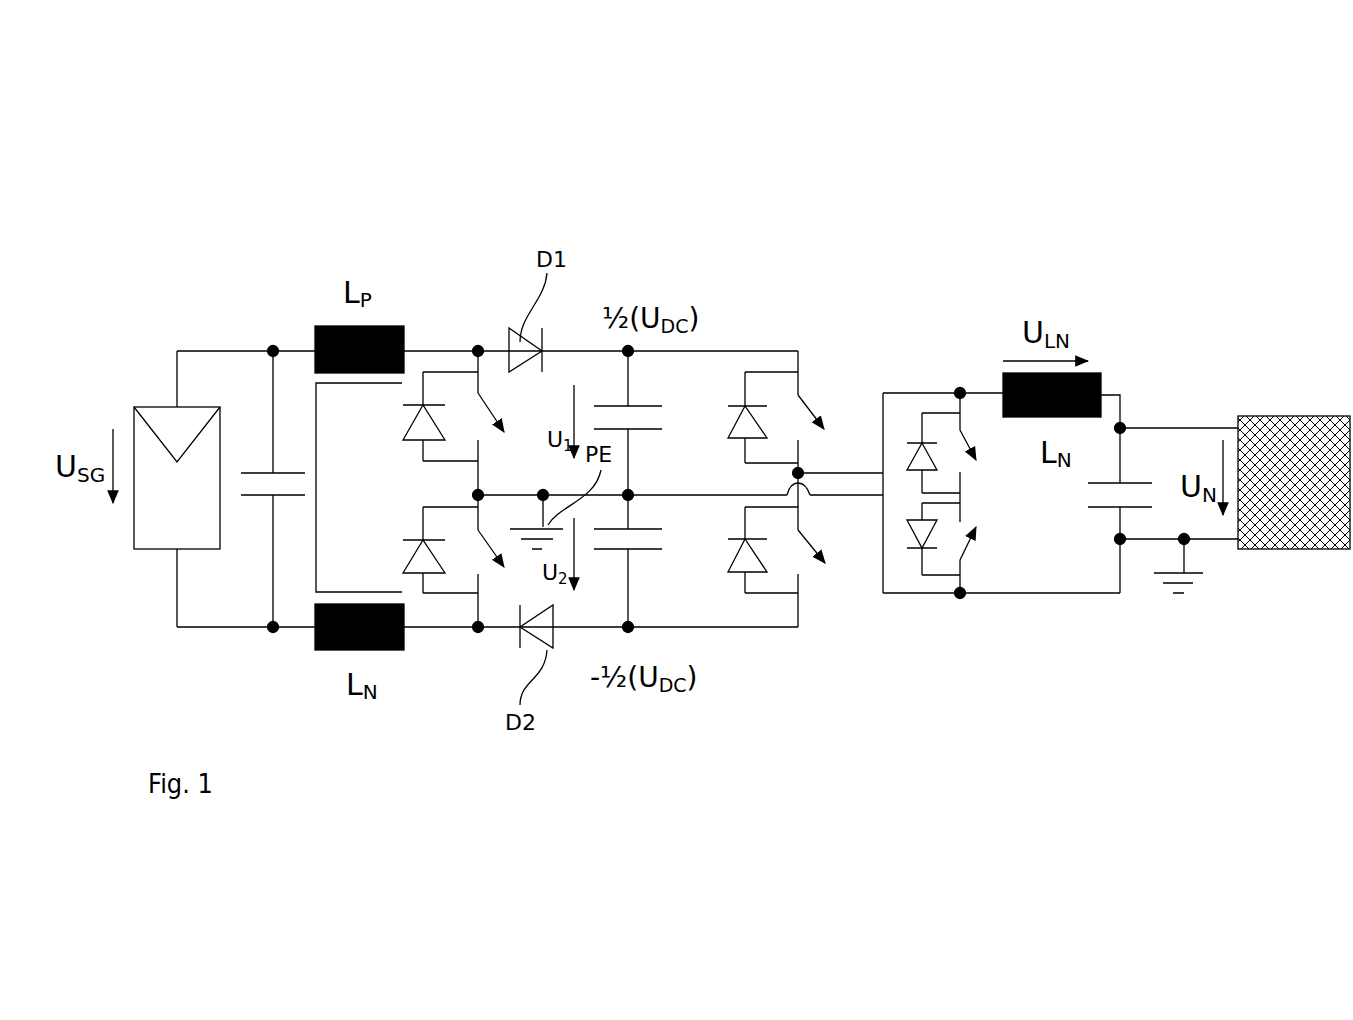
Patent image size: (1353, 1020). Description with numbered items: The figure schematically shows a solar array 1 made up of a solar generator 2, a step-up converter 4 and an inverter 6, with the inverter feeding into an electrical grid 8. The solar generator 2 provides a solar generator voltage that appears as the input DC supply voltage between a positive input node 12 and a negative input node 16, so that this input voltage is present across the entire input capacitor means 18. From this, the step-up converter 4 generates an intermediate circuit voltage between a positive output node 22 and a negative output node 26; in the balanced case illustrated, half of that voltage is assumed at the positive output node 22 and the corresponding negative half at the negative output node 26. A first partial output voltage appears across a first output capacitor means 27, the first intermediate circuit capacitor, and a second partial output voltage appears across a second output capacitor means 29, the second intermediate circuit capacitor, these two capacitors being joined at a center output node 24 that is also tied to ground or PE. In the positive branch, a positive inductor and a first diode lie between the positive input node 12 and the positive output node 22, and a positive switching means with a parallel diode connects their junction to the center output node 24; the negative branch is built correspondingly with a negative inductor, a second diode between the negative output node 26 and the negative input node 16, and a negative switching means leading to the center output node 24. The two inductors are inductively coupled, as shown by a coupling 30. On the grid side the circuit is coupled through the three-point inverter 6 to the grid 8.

The solar array 1 is at (670, 190).
The solar generator 2 is at (157, 413).
The step-up converter 4 is at (455, 292).
The inverter 6 is at (883, 290).
The electrical grid 8 is at (1298, 375).
The positive input node 12 is at (273, 345).
The negative input node 16 is at (273, 633).
The input capacitor means 18 is at (257, 483).
The positive output node 22 is at (633, 355).
The center output node 24 is at (633, 492).
The negative output node 26 is at (633, 621).
The first output capacitor means 27 is at (647, 421).
The second output capacitor means 29 is at (648, 535).
The coupling 30 is at (318, 512).